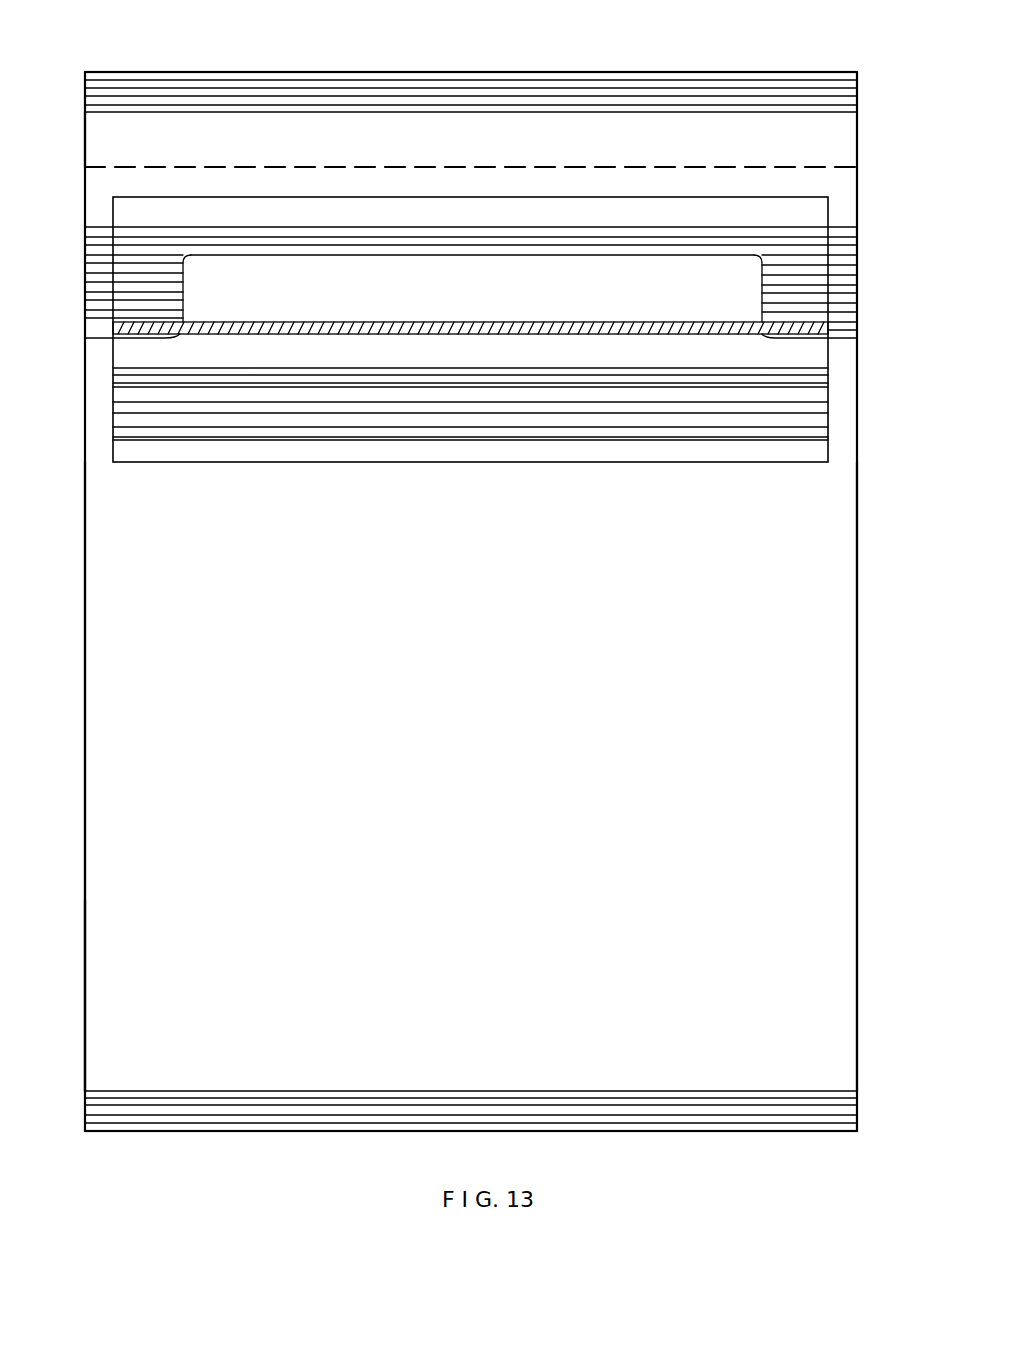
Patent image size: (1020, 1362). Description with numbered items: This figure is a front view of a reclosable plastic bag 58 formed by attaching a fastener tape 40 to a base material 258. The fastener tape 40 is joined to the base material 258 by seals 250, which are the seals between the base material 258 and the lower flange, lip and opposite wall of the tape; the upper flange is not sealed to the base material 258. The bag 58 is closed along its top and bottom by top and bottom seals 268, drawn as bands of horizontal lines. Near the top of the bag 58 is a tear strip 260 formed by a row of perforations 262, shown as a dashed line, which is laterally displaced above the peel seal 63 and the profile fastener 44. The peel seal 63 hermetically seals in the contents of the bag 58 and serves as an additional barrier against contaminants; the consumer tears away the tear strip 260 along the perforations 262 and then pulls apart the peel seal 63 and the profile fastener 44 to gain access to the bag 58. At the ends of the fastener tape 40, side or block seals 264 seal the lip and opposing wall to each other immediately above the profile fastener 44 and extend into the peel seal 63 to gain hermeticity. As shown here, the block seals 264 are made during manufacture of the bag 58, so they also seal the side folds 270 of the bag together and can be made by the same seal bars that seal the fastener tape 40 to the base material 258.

The fastener tape 40 is at (750, 210).
The profile fastener 44 is at (808, 376).
The reclosable plastic bag 58 is at (63, 815).
The peel seal 63 is at (723, 316).
The seals 250 is at (467, 237).
The base material 258 is at (140, 1000).
The tear strip 260 is at (88, 142).
The perforations 262 is at (100, 166).
The block seals 264 is at (95, 288).
The top and bottom seals 268 is at (138, 80).
The side folds 270 is at (85, 617).